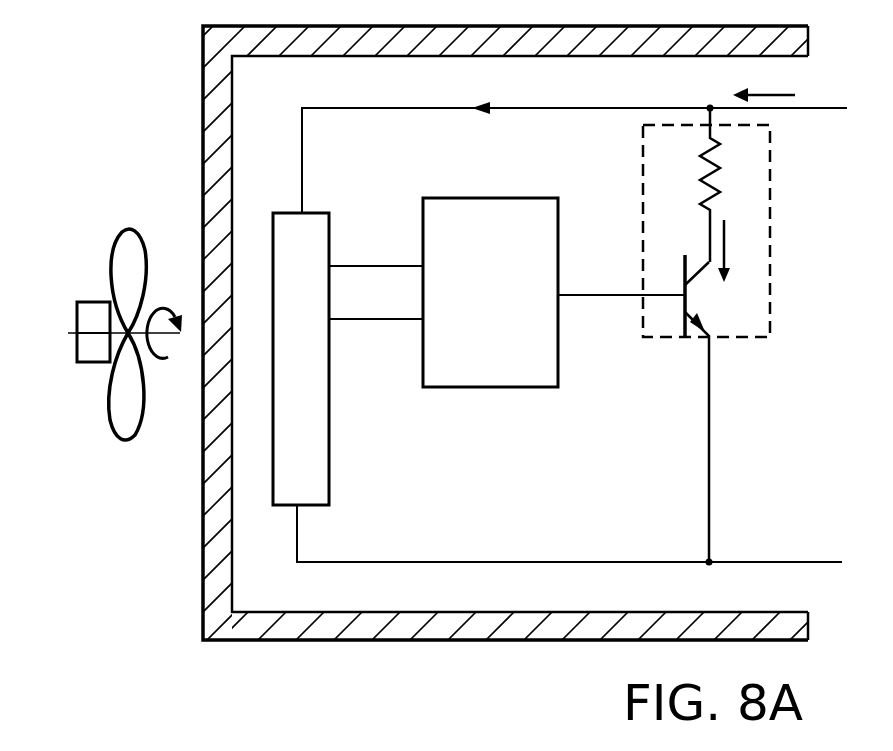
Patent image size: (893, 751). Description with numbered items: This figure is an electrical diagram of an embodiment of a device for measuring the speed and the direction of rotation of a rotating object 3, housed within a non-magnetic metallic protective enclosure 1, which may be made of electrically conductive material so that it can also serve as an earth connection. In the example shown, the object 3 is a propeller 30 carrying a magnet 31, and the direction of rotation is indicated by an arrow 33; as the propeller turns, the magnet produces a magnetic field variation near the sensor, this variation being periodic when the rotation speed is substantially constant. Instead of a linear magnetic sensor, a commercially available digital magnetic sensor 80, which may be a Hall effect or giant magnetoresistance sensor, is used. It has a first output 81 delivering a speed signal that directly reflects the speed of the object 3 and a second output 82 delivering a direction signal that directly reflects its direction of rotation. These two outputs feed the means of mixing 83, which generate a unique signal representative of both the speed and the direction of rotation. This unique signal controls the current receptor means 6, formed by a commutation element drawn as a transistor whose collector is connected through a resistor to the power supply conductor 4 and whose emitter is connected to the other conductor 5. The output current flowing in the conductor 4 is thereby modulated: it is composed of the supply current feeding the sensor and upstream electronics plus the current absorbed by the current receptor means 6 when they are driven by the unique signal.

The protective enclosure 1 is at (288, 632).
The object 3 is at (112, 373).
The propeller 30 is at (125, 433).
The magnet 31 is at (82, 363).
The rotation direction 33 is at (143, 330).
The electrical conductor 4 is at (817, 108).
The other conductor 5 is at (753, 560).
The current receptor means 6 is at (757, 330).
The digital magnetic sensor 80 is at (312, 473).
The output 81 is at (330, 263).
The output 82 is at (330, 322).
The means of mixing 83 is at (497, 378).